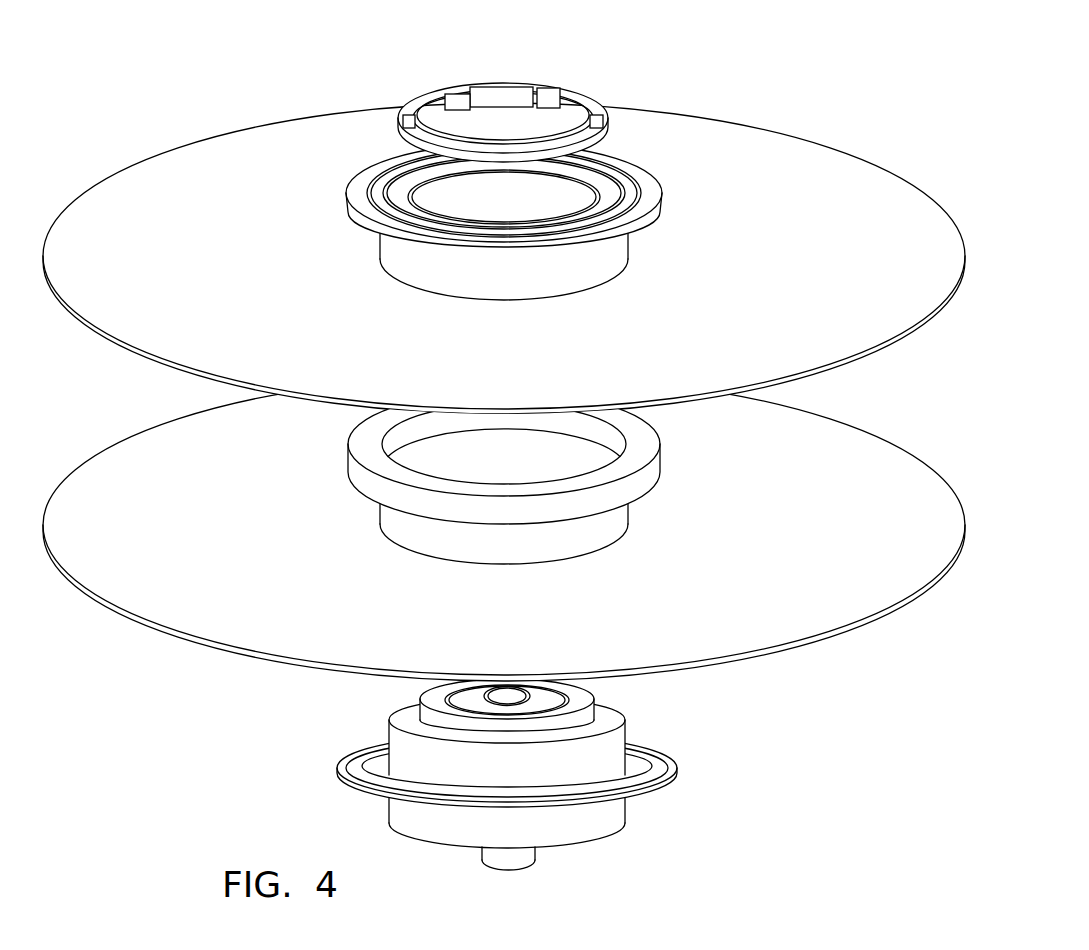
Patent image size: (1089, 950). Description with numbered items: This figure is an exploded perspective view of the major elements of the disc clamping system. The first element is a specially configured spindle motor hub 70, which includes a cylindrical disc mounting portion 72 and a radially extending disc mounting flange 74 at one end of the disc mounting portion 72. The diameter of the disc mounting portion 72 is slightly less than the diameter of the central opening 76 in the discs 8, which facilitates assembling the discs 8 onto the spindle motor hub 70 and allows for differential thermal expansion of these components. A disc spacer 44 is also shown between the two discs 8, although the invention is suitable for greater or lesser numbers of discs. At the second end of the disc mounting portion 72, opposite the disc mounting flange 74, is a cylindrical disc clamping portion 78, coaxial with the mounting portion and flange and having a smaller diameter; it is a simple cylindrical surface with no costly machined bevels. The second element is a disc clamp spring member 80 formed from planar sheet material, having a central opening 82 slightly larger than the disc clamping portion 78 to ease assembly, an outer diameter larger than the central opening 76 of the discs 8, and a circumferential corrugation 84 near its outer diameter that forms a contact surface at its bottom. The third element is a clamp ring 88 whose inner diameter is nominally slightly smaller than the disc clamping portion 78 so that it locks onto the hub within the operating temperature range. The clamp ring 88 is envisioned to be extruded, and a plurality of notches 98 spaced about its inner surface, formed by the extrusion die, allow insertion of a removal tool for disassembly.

The discs 8 is at (918, 255).
The disc spacer 44 is at (640, 447).
The spindle motor hub 70 is at (473, 774).
The disc mounting portion 72 is at (583, 760).
The disc mounting flange 74 is at (648, 780).
The central opening 76 is at (622, 262).
The disc clamping portion 78 is at (570, 721).
The disc clamp spring member 80 is at (613, 188).
The central opening 82 is at (573, 170).
The circumferential corrugation 84 is at (522, 162).
The clamp ring 88 is at (492, 92).
The notches 98 is at (548, 90).